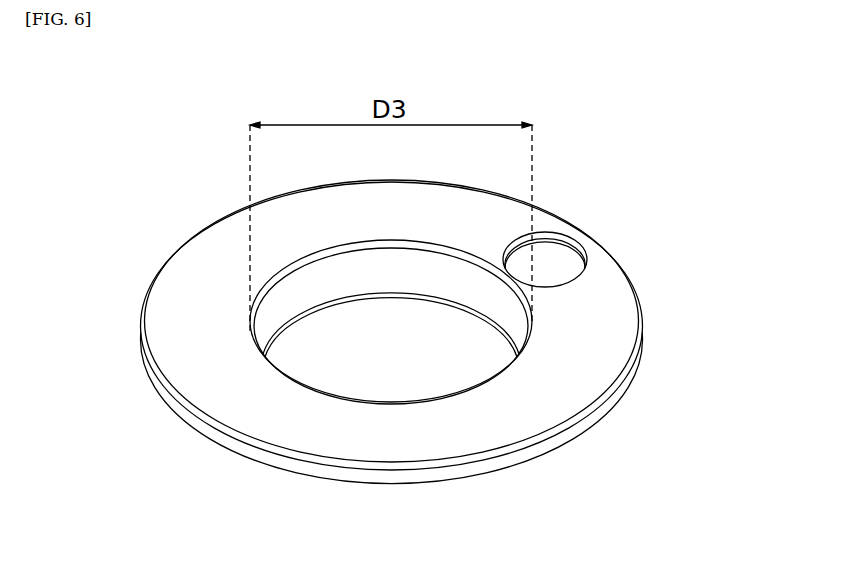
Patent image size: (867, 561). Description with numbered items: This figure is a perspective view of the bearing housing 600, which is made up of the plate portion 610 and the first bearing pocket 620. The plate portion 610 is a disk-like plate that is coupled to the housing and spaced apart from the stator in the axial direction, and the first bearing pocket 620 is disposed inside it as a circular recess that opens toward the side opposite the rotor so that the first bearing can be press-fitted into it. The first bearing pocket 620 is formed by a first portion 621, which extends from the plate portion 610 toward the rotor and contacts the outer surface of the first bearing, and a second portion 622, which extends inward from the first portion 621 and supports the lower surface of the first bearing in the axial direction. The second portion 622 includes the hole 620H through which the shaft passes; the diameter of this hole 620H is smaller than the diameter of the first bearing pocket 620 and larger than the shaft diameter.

The bearing housing 600 is at (599, 228).
The plate portion 610 is at (607, 298).
The first bearing pocket 620 is at (415, 268).
The first portion 621 is at (280, 303).
The second portion 622 is at (268, 346).
The hole 620H is at (393, 365).